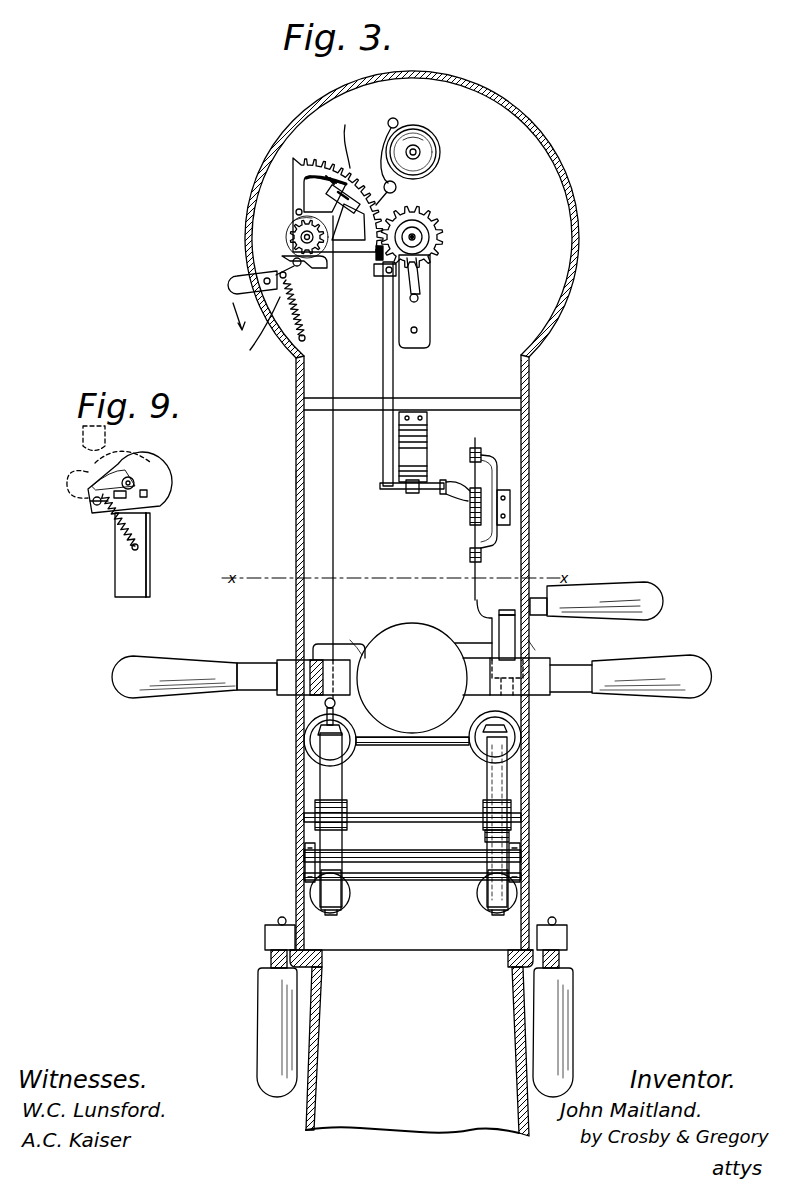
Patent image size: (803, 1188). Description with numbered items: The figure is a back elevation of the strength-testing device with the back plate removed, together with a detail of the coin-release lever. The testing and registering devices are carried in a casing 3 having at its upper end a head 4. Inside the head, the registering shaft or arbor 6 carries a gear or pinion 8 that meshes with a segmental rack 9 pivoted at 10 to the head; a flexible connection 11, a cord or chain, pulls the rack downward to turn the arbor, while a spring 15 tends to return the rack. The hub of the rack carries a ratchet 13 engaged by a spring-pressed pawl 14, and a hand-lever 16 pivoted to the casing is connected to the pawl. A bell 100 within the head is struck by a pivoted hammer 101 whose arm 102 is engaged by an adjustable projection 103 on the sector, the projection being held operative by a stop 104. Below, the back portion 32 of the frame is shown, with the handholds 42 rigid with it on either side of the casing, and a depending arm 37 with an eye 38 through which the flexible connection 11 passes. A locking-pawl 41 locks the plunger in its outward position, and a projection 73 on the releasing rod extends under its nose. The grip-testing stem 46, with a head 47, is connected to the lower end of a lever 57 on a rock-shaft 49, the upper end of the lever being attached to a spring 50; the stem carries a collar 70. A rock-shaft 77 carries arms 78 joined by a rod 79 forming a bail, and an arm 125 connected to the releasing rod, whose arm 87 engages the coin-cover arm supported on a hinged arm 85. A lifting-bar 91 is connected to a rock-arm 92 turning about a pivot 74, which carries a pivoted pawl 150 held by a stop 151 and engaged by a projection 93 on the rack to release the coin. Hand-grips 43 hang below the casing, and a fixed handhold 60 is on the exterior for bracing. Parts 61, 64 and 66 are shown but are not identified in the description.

In FIG. 3, the casing 3 is at (296, 480).
In FIG. 3, the head 4 is at (570, 118).
In FIG. 3, the shaft or arbor 6 is at (420, 237).
In FIG. 3, the gear or pinion 8 is at (416, 236).
In FIG. 3, the segmental rack 9 is at (311, 160).
In FIG. 3, the pivot 10 is at (300, 236).
In FIG. 3, the flexible connection 11 is at (338, 368).
In FIG. 3, the ratchet 13 is at (288, 258).
In FIG. 3, the spring-pressed pawl 14 is at (297, 300).
In FIG. 3, the spring 15 is at (300, 230).
In FIG. 3, the hand-lever 16 is at (252, 292).
In FIG. 3, the back portion of frame 32 is at (402, 678).
In FIG. 3, the depending arm 37 is at (350, 642).
In FIG. 3, the eye 38 is at (336, 708).
In FIG. 3, the locking-pawl 41 is at (508, 614).
In FIG. 3, the handholds 42 is at (148, 657).
In FIG. 3, the hand-grips 43 is at (540, 1022).
In FIG. 3, the stem 46 is at (507, 786).
In FIG. 3, the head 47 is at (496, 883).
In FIG. 3, the rock-shaft 49 is at (386, 814).
In FIG. 3, the spring 50 is at (352, 752).
In FIG. 3, the lever 57 is at (323, 768).
In FIG. 3, the fixed handhold 60 is at (497, 480).
In FIG. 3, the bent rod 61 is at (476, 596).
In FIG. 3, the block 64 is at (416, 495).
In FIG. 3, the bar 66 is at (400, 489).
In FIG. 3, the collar 70 is at (350, 896).
In FIG. 3, the projection 73 is at (532, 647).
In FIG. 9, the pivot 74 is at (152, 506).
In FIG. 3, the rock-shaft 77 is at (396, 856).
In FIG. 3, the arms 78 is at (305, 858).
In FIG. 3, the rod 79 is at (400, 880).
In FIG. 3, the arm 85 is at (425, 444).
In FIG. 3, the arm 87 is at (448, 496).
In FIG. 3, the lifting-bar 91 is at (394, 378).
In FIG. 9, the lifting-bar 91 is at (150, 531).
In FIG. 3, the rock-arm 92 is at (388, 277).
In FIG. 9, the rock-arm 92 is at (138, 546).
In FIG. 3, the projection 93 is at (377, 258).
In FIG. 9, the projection 93 is at (106, 442).
In FIG. 3, the bell 100 is at (430, 150).
In FIG. 3, the hammer 101 is at (395, 118).
In FIG. 3, the arm 102 is at (404, 192).
In FIG. 3, the adjustable projection 103 is at (355, 139).
In FIG. 3, the stop 104 is at (344, 190).
In FIG. 3, the arm 125 is at (522, 812).
In FIG. 3, the pivoted pawl 150 is at (430, 264).
In FIG. 9, the pivoted pawl 150 is at (120, 468).
In FIG. 9, the stop 151 is at (95, 503).